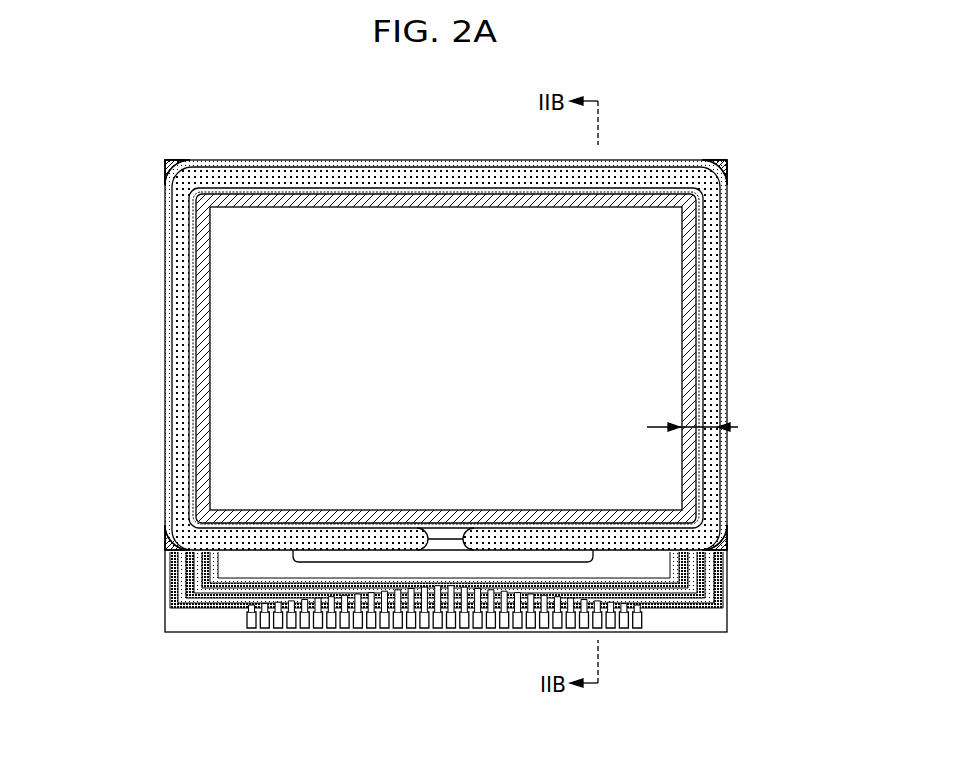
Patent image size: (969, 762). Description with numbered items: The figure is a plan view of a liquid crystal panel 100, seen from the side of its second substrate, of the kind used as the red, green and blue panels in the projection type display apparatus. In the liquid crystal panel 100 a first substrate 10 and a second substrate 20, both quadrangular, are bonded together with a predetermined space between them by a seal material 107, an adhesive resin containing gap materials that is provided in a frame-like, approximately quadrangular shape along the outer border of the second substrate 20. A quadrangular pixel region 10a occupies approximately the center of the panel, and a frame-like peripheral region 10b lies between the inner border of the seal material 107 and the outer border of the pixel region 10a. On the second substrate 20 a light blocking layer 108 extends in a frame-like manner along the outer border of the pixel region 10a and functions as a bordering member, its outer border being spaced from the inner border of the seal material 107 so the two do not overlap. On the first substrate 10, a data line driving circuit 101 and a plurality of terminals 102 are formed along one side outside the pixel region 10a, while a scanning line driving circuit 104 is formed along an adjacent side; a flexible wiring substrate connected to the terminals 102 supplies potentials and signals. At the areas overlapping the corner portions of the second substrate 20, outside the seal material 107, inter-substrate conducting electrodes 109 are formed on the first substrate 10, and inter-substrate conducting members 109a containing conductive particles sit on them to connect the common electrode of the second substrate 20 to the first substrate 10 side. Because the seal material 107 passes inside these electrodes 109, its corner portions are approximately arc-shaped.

The first substrate 10 is at (178, 633).
The pixel region 10a is at (262, 355).
The peripheral region 10b is at (692, 428).
The second substrate 20 is at (258, 552).
The liquid crystal panel 100 is at (652, 128).
The data line driving circuit 101 is at (657, 568).
The terminals 102 is at (444, 633).
The scanning line driving circuit 104 is at (197, 428).
The seal material 107 is at (720, 318).
The light blocking layer 108 is at (680, 262).
The inter-substrate conducting electrodes 109 is at (168, 160).
The inter-substrate conducting members 109a is at (446, 355).